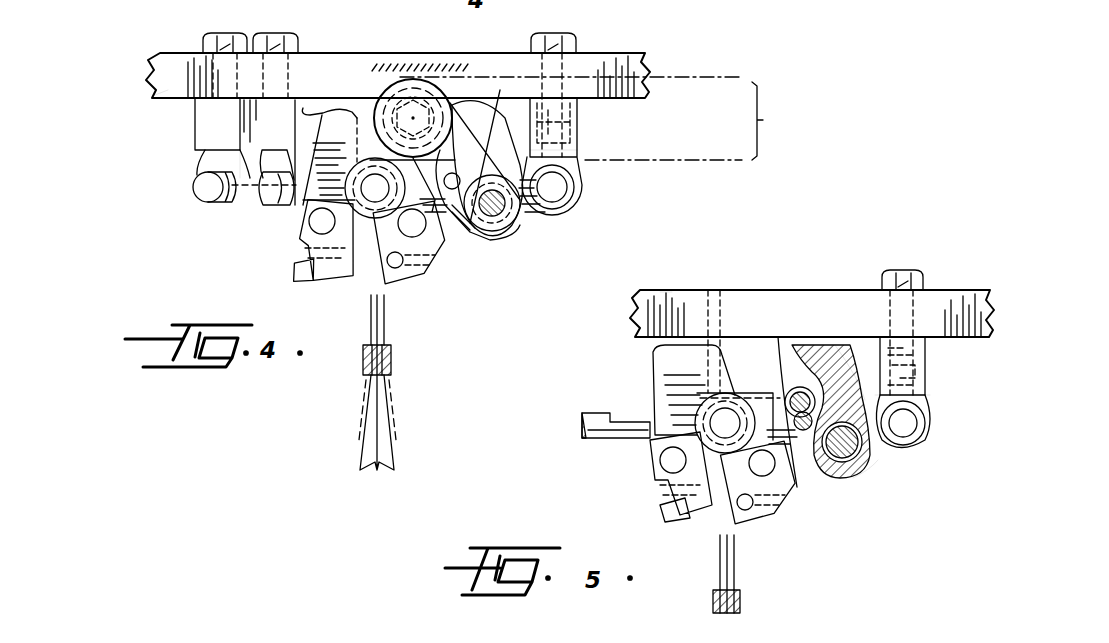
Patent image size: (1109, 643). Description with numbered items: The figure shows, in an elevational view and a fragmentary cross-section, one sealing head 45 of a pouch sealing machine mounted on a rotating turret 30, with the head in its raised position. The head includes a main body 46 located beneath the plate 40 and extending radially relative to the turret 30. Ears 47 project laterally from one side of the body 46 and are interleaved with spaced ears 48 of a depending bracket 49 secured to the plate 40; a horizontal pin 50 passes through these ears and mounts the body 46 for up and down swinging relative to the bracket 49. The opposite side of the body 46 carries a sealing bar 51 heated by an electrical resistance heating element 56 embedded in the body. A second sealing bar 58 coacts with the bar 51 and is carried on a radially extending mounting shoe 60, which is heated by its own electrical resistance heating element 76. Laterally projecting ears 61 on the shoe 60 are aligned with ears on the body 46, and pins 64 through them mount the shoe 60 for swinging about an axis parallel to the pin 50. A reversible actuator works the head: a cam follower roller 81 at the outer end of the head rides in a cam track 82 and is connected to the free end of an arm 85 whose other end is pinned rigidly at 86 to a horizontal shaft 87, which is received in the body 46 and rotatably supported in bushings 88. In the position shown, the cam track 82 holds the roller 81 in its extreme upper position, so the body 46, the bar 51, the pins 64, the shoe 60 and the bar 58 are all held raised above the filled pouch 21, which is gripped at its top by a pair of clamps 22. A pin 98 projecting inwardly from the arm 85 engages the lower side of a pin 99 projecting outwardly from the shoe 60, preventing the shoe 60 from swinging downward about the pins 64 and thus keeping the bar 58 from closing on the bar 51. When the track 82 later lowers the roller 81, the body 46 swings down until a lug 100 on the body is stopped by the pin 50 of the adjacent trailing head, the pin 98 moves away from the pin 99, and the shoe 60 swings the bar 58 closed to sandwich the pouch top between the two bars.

In FIG. 4, the filled pouch 21 is at (400, 410).
In FIG. 5, the filled pouch 21 is at (716, 582).
In FIG. 4, the clamps 22 is at (392, 355).
In FIG. 5, the clamps 22 is at (740, 604).
In FIG. 4, the turret 30 is at (165, 50).
In FIG. 5, the turret 30 is at (948, 290).
In FIG. 4, the plate 40 is at (168, 90).
In FIG. 5, the plate 40 is at (665, 292).
In FIG. 4, the sealing head 45 is at (292, 248).
In FIG. 5, the sealing head 45 is at (808, 520).
In FIG. 5, the main body 46 is at (830, 380).
In FIG. 4, the ears 47 is at (577, 208).
In FIG. 5, the ears 47 is at (925, 435).
In FIG. 4, the spaced ears 48 is at (263, 213).
In FIG. 4, the depending bracket 49 is at (208, 125).
In FIG. 5, the depending bracket 49 is at (925, 370).
In FIG. 4, the horizontal pin 50 is at (203, 188).
In FIG. 5, the horizontal pin 50 is at (920, 417).
In FIG. 4, the sealing bar 51 is at (330, 275).
In FIG. 5, the sealing bar 51 is at (676, 518).
In FIG. 5, the electrical resistance heating element 56 is at (660, 462).
In FIG. 4, the second sealing bar 58 is at (400, 274).
In FIG. 5, the second sealing bar 58 is at (748, 524).
In FIG. 4, the mounting shoe 60 is at (452, 228).
In FIG. 5, the mounting shoe 60 is at (773, 397).
In FIG. 5, the laterally projecting ears 61 is at (718, 397).
In FIG. 4, the pins 64 is at (368, 183).
In FIG. 5, the pins 64 is at (722, 423).
In FIG. 5, the electrical resistance heating element 76 is at (772, 466).
In FIG. 4, the roller 81 is at (423, 78).
In FIG. 4, the cam track 82 is at (779, 121).
In FIG. 4, the arm 85 is at (465, 157).
In FIG. 4, the pin connection 86 is at (495, 247).
In FIG. 4, the horizontal shaft 87 is at (512, 220).
In FIG. 5, the horizontal shaft 87 is at (850, 460).
In FIG. 5, the bushings 88 is at (875, 462).
In FIG. 4, the pin 98 is at (455, 150).
In FIG. 5, the pin 98 is at (817, 375).
In FIG. 4, the pin 99 is at (456, 172).
In FIG. 5, the pin 99 is at (790, 396).
In FIG. 4, the lug 100 is at (305, 108).
In FIG. 5, the lug 100 is at (658, 350).